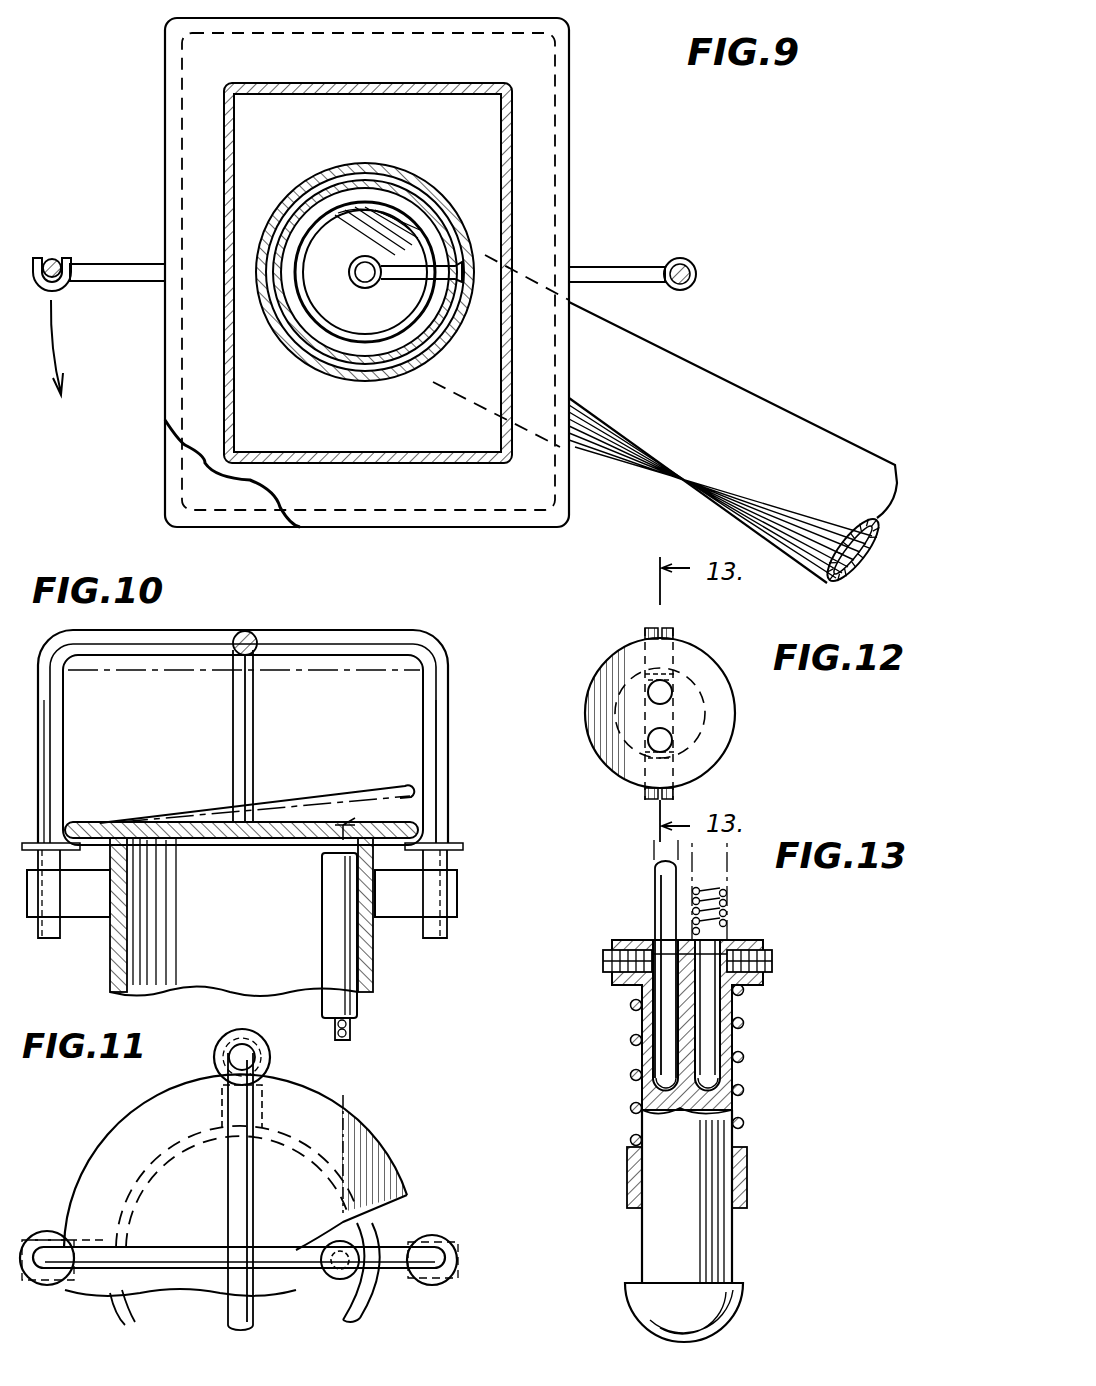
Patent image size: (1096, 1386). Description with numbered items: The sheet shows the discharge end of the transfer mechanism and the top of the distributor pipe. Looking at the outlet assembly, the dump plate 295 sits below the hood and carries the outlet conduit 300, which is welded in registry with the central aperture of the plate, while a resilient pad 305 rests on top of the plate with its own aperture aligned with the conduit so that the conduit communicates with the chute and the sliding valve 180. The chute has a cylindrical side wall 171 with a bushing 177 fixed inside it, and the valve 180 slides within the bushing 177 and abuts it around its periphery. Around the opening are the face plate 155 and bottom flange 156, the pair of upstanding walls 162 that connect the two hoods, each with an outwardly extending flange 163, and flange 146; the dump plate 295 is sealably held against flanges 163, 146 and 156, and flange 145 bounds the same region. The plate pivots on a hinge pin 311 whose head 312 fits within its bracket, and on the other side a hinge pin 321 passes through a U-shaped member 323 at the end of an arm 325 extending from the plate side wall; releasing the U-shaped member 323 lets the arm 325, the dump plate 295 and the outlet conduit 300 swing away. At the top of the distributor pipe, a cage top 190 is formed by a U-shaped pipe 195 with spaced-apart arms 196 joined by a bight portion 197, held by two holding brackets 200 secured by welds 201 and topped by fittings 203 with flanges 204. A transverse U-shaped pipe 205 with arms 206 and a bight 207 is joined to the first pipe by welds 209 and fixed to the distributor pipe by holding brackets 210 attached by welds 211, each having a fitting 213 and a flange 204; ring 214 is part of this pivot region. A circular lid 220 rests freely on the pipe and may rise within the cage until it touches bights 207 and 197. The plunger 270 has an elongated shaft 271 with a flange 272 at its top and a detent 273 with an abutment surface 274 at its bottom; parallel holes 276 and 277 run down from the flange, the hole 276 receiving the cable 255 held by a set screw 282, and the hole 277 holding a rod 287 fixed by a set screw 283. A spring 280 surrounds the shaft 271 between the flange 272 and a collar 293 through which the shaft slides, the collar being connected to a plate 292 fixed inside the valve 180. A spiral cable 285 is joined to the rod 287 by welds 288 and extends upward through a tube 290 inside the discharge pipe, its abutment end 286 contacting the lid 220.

In FIG. 9, the bottom wall of liner 145 is at (372, 462).
In FIG. 9, the flange 146 is at (346, 501).
In FIG. 9, the face plate 155 is at (372, 92).
In FIG. 9, the bottom flange 156 is at (318, 66).
In FIG. 9, the upstanding wall 162 is at (508, 226).
In FIG. 9, the outwardly extending flange 163 is at (540, 120).
In FIG. 9, the side wall 171 is at (292, 352).
In FIG. 9, the bushing 177 is at (322, 372).
In FIG. 9, the sliding valve 180 is at (363, 382).
In FIG. 10, the cage top 190 is at (422, 608).
In FIG. 10, the U-shaped pipe 195 is at (459, 700).
In FIG. 10, the arm 196 is at (440, 750).
In FIG. 10, the bight portion 197 is at (180, 648).
In FIG. 11, the bight portion 197 is at (165, 1258).
In FIG. 10, the holding bracket 200 is at (85, 905).
In FIG. 11, the holding bracket 200 is at (400, 1277).
In FIG. 10, the weld 201 is at (125, 858).
In FIG. 11, the weld 201 is at (378, 1237).
In FIG. 10, the fitting 203 is at (450, 861).
In FIG. 10, the flange 204 is at (60, 818).
In FIG. 11, the flange 204 is at (448, 1240).
In FIG. 10, the U-shaped pipe 205 is at (220, 707).
In FIG. 10, the arm 206 is at (240, 758).
In FIG. 10, the bight 207 is at (258, 636).
In FIG. 11, the bight 207 is at (248, 1205).
In FIG. 11, the weld 209 is at (253, 1250).
In FIG. 11, the holding bracket 210 is at (277, 1092).
In FIG. 11, the weld 211 is at (270, 1122).
In FIG. 11, the fitting 213 is at (262, 1058).
In FIG. 11, the pivot ring 214 is at (215, 1062).
In FIG. 10, the circular lid 220 is at (385, 682).
In FIG. 9, the cable 255 is at (361, 285).
In FIG. 13, the cable 255 is at (658, 890).
In FIG. 12, the plunger 270 is at (735, 650).
In FIG. 13, the plunger 270 is at (833, 1004).
In FIG. 12, the elongated shaft 271 is at (736, 714).
In FIG. 13, the elongated shaft 271 is at (648, 1021).
In FIG. 13, the flange 272 is at (760, 941).
In FIG. 13, the detent 273 is at (652, 1300).
In FIG. 13, the abutment surface 274 is at (742, 1283).
In FIG. 12, the elongated hole 276 is at (735, 747).
In FIG. 13, the elongated hole 276 is at (650, 1085).
In FIG. 12, the elongated hole 277 is at (652, 690).
In FIG. 13, the elongated hole 277 is at (720, 1041).
In FIG. 13, the spring 280 is at (745, 1058).
In FIG. 12, the set screw 282 is at (650, 800).
In FIG. 13, the set screw 282 is at (603, 960).
In FIG. 12, the set screw 283 is at (648, 630).
In FIG. 13, the set screw 283 is at (772, 963).
In FIG. 9, the spiral cable 285 is at (362, 257).
In FIG. 10, the spiral cable 285 is at (352, 1031).
In FIG. 13, the spiral cable 285 is at (728, 889).
In FIG. 10, the abutment end 286 is at (355, 818).
In FIG. 11, the abutment end 286 is at (345, 1215).
In FIG. 13, the rod 287 is at (712, 1078).
In FIG. 13, the weld 288 is at (730, 931).
In FIG. 10, the tube 290 is at (335, 936).
In FIG. 11, the tube 290 is at (335, 1268).
In FIG. 9, the plate 292 is at (412, 272).
In FIG. 9, the collar 293 is at (377, 285).
In FIG. 13, the collar 293 is at (627, 1182).
In FIG. 9, the dump plate 295 is at (165, 500).
In FIG. 9, the outlet conduit 300 is at (350, 207).
In FIG. 9, the resilient pad 305 is at (468, 146).
In FIG. 9, the hinge pin 311 is at (690, 260).
In FIG. 9, the head 312 is at (688, 287).
In FIG. 9, the hinge pin 321 is at (55, 258).
In FIG. 9, the U-shaped member 323 is at (62, 290).
In FIG. 9, the arm 325 is at (115, 262).